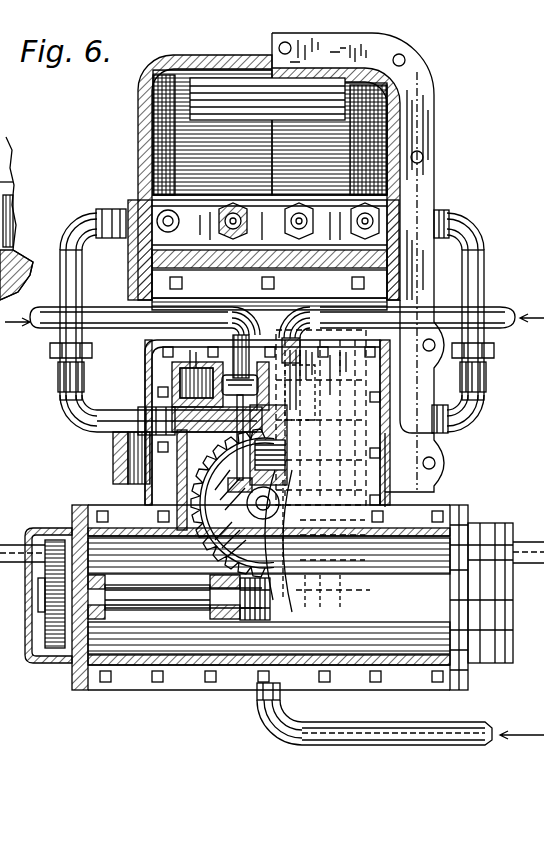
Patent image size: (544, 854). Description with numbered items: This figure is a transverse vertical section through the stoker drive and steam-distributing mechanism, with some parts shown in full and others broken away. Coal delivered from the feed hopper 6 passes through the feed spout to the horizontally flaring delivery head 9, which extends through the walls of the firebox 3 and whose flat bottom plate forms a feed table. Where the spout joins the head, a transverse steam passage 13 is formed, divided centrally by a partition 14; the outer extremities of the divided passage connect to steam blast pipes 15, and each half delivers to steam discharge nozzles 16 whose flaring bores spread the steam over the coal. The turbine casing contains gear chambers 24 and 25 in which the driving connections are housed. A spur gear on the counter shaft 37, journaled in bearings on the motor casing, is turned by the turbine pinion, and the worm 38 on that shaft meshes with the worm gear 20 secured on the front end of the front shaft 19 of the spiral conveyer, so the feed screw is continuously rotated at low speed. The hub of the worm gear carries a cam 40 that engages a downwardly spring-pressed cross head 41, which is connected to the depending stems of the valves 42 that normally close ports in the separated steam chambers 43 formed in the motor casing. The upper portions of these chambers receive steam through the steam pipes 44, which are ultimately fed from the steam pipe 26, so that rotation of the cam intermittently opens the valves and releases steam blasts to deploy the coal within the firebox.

The walls of the firebox 3 is at (16, 266).
The feed hopper 6 is at (48, 620).
The delivery head 9 is at (138, 122).
The steam passage 13 is at (291, 212).
The partition 14 is at (266, 248).
The steam blast pipes 15 is at (74, 226).
The steam discharge nozzles 16 is at (143, 212).
The front shaft 19 is at (272, 500).
The worm gear 20 is at (250, 548).
The gear chamber 24 is at (40, 652).
The gear chamber 25 is at (143, 648).
The steam pipe 26 is at (370, 733).
The counter shaft 37 is at (183, 597).
The worm 38 is at (255, 607).
The cam 40 is at (282, 493).
The cross head 41 is at (240, 466).
The valves 42 is at (232, 444).
The steam chambers 43 is at (202, 416).
The steam pipes 44 is at (516, 288).